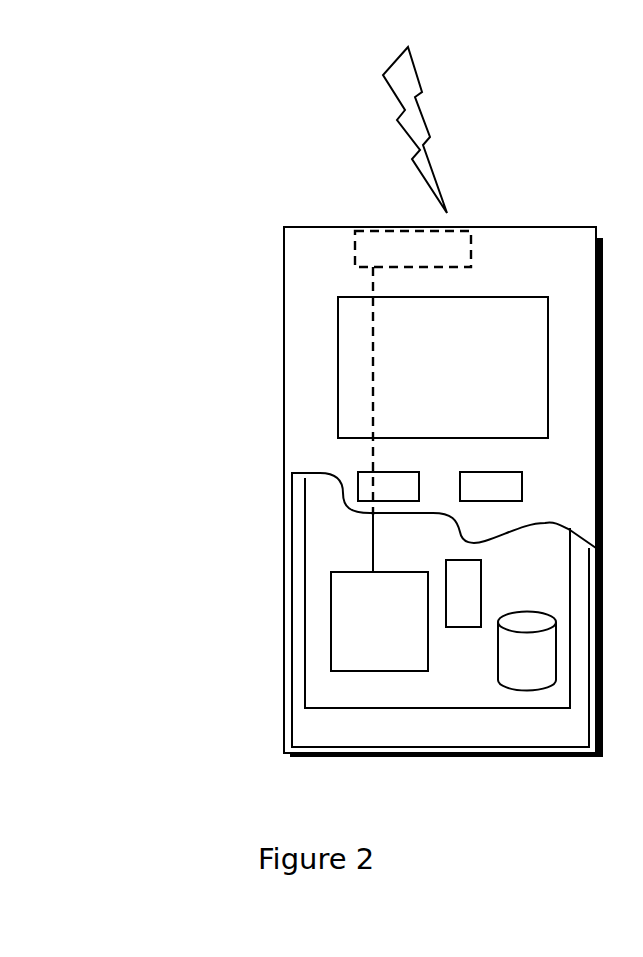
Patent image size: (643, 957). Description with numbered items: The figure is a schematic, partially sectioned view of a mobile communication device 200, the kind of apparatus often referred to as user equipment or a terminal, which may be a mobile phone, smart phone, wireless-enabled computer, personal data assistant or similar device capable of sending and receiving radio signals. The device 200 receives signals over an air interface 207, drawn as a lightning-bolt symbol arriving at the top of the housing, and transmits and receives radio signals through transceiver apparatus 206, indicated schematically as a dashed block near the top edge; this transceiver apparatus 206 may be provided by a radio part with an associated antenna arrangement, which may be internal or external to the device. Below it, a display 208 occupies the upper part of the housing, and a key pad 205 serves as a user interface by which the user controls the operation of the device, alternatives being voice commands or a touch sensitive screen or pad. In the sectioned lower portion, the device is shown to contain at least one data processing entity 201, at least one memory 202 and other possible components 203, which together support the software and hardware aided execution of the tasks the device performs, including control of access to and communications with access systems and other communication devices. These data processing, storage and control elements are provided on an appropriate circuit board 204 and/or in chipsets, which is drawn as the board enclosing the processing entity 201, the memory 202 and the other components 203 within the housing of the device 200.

The communication device 200 is at (285, 271).
The data processing entity 201 is at (338, 604).
The memory 202 is at (520, 663).
The other possible components 203 is at (463, 577).
The circuit board 204 is at (330, 692).
The key pad 205 is at (362, 487).
The transceiver apparatus 206 is at (460, 242).
The air interface 207 is at (449, 152).
The display 208 is at (355, 354).